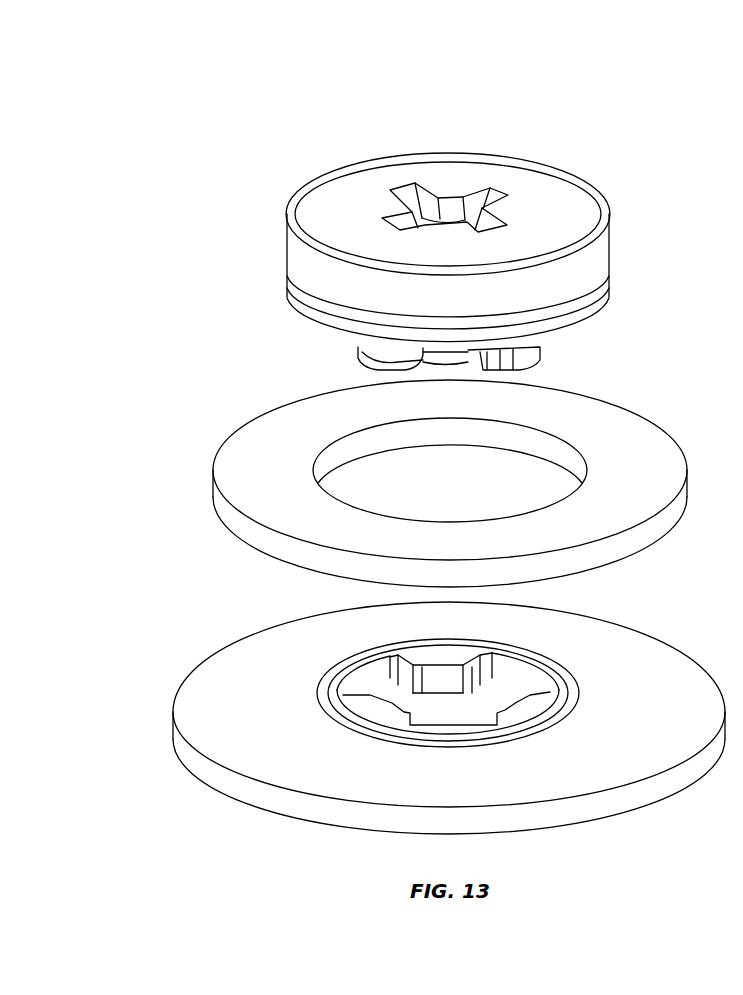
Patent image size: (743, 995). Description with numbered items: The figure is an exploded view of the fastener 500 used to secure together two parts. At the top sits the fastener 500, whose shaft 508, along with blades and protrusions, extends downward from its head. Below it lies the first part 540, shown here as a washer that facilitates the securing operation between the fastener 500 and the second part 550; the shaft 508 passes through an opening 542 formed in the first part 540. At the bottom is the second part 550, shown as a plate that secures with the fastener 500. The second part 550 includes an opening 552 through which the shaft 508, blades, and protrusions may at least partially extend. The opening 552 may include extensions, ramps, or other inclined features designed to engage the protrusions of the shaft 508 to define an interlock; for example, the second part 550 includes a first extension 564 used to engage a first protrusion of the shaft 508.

The fastener 500 is at (318, 150).
The shaft 508 is at (458, 360).
The first part 540 is at (662, 455).
The opening 542 is at (298, 439).
The second part 550 is at (677, 672).
The opening 552 is at (318, 666).
The first extension 564 is at (427, 664).